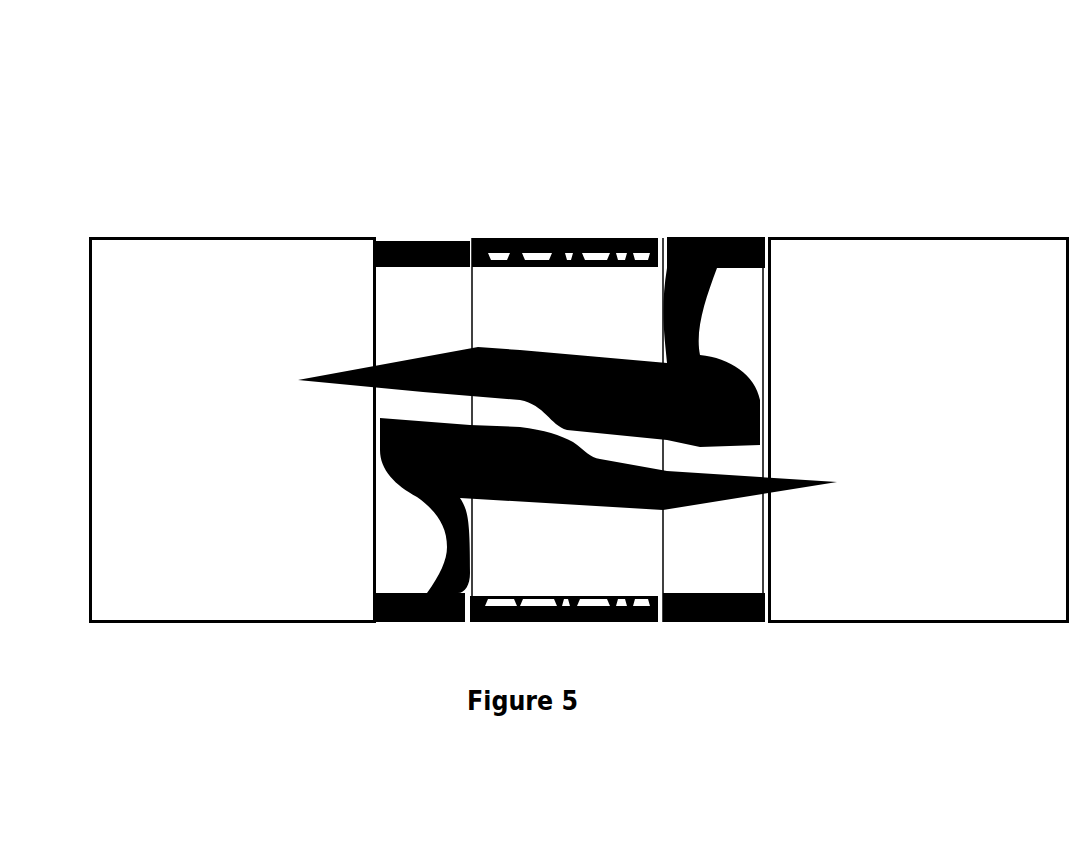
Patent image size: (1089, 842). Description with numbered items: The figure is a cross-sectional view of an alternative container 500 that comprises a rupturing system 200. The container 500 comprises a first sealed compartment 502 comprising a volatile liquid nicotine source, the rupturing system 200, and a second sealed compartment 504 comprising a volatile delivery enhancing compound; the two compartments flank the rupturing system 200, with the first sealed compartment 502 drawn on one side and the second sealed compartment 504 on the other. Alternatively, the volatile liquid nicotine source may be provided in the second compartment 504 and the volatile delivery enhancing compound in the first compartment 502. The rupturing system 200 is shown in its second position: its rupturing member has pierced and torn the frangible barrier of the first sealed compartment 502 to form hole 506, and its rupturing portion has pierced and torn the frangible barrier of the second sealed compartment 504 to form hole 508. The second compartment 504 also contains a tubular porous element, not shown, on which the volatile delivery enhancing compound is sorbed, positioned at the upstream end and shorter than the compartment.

The container 500 is at (410, 98).
The rupturing system 200 is at (661, 203).
The first sealed compartment 502 is at (180, 283).
The second sealed compartment 504 is at (993, 280).
The hole 506 is at (365, 417).
The hole 508 is at (774, 485).